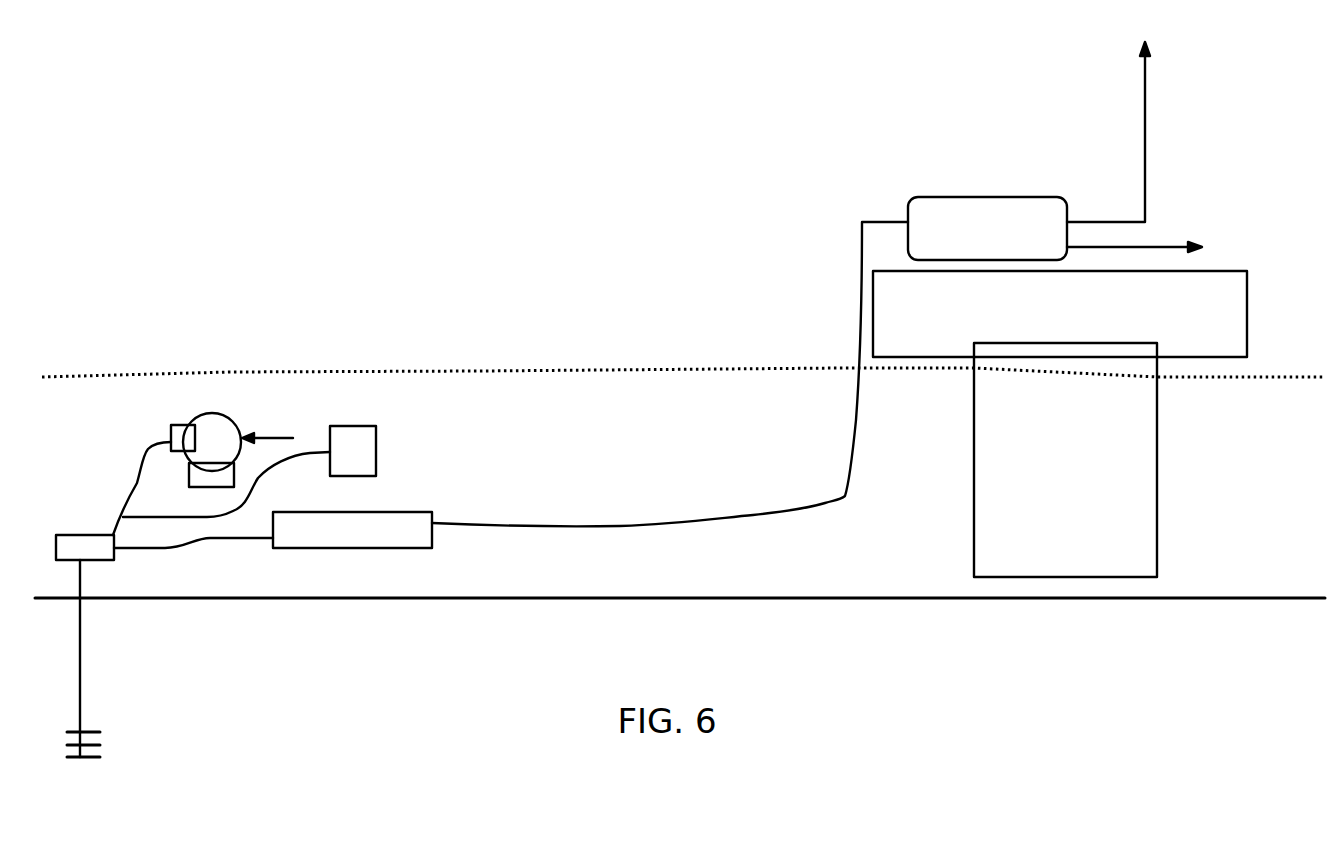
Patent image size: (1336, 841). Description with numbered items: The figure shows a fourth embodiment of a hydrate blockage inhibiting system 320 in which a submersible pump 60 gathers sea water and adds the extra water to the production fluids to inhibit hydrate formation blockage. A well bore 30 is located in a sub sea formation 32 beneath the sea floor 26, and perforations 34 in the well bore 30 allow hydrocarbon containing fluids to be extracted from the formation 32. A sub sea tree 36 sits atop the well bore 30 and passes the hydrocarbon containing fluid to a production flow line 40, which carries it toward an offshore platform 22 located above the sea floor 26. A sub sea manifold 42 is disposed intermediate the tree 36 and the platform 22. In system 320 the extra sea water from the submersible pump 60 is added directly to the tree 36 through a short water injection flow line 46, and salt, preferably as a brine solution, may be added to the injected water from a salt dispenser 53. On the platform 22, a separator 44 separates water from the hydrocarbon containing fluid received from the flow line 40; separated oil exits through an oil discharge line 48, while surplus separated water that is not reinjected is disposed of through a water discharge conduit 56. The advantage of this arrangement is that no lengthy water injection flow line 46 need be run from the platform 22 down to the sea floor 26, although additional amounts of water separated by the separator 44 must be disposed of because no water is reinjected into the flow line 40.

The hydrate blockage inhibiting system 320 is at (323, 73).
The offshore platform 22 is at (1255, 280).
The sea floor 26 is at (477, 598).
The well bore 30 is at (80, 647).
The sub sea formation 32 is at (277, 685).
The perforations 34 is at (97, 732).
The sub sea tree 36 is at (74, 535).
The production flow line 40 is at (758, 517).
The sub sea manifold 42 is at (345, 548).
The separator 44 is at (972, 247).
The water injection flow line 46 is at (147, 448).
The oil discharge line 48 is at (1160, 243).
The salt dispenser 53 is at (376, 450).
The water discharge conduit 56 is at (1147, 78).
The submersible pump 60 is at (214, 413).